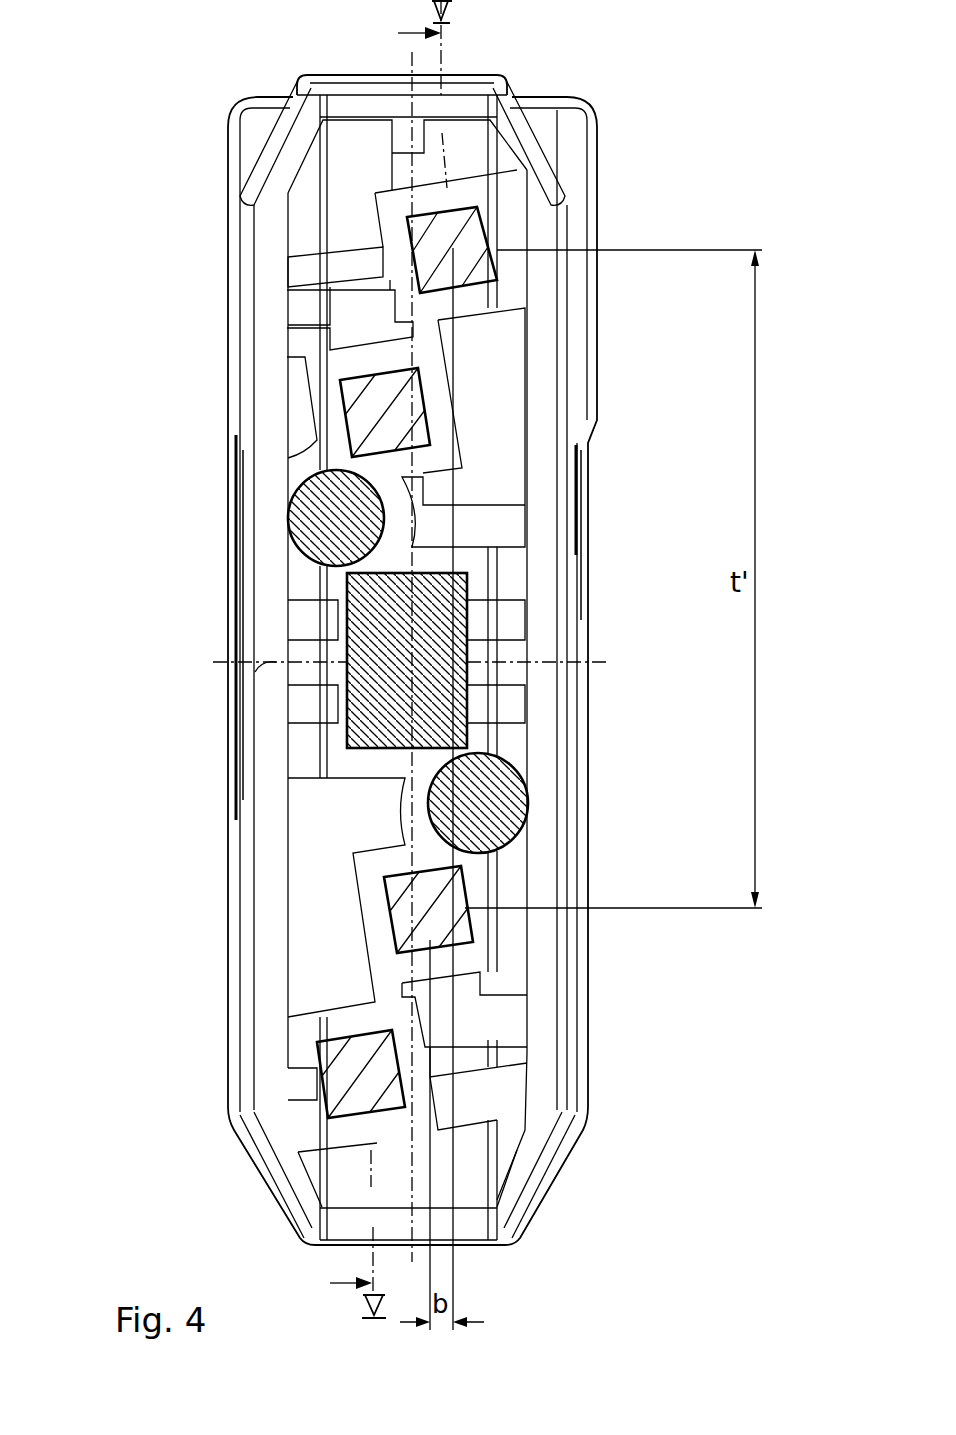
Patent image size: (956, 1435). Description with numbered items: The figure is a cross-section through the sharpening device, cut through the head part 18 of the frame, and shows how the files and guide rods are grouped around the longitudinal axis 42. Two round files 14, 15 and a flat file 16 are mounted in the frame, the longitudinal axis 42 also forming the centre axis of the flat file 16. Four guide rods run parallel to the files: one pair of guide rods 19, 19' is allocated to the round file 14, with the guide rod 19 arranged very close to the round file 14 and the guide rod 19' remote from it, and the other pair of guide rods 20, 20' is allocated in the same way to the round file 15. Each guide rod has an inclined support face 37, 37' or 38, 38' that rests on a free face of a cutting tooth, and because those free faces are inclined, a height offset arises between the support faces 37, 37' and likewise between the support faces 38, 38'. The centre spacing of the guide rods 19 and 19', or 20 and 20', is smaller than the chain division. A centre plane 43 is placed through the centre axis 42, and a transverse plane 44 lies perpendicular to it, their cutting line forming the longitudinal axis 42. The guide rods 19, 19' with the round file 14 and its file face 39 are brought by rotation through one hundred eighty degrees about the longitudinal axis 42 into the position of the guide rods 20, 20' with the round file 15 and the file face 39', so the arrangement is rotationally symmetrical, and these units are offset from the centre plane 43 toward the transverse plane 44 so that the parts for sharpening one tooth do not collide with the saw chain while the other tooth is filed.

The round file 14 is at (522, 793).
The round file 15 is at (290, 517).
The flat file 16 is at (467, 652).
The head part 18 is at (603, 417).
The guide rod 19 is at (552, 912).
The guide rod 19' is at (567, 213).
The guide rod 20 is at (271, 412).
The guide rod 20' is at (259, 1074).
The support face 37 is at (561, 1032).
The support face 37' is at (508, 247).
The support face 38 is at (263, 377).
The support face 38' is at (215, 1067).
The file face 39 is at (594, 683).
The file face 39' is at (230, 644).
The longitudinal axis 42 is at (347, 700).
The centre plane 43 is at (413, 760).
The transverse plane 44 is at (262, 664).